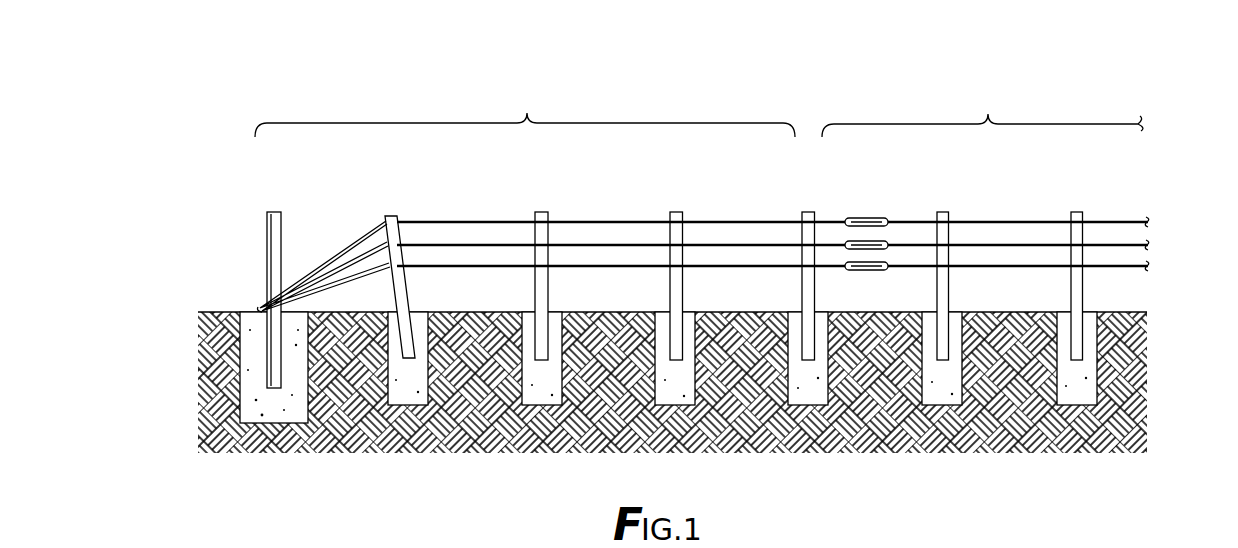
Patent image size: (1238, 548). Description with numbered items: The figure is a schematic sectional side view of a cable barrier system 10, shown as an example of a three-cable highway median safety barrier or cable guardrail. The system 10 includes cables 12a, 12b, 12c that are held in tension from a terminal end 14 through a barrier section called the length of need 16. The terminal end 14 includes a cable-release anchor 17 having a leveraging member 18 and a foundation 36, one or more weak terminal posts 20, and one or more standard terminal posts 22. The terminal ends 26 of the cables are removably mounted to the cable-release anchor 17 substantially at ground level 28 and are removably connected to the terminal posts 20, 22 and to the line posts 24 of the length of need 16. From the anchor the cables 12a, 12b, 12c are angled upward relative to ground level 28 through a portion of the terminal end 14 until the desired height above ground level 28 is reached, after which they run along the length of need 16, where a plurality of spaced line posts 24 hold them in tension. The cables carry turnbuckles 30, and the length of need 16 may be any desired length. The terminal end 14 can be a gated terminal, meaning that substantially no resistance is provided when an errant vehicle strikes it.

The cable barrier system 10 is at (1059, 90).
The cable 12a is at (1150, 223).
The cable 12b is at (1141, 246).
The cable 12c is at (1138, 269).
The terminal end 14 is at (527, 112).
The length of need 16 is at (988, 112).
The cable-release anchor 17 is at (294, 202).
The leveraging member 18 is at (266, 213).
The weak terminal post 20 is at (534, 213).
The standard terminal post 22 is at (801, 213).
The line post 24 is at (1070, 214).
The terminal ends of cables 26 is at (287, 275).
The ground level 28 is at (607, 312).
The turnbuckle 30 is at (866, 216).
The foundation 36 is at (262, 340).